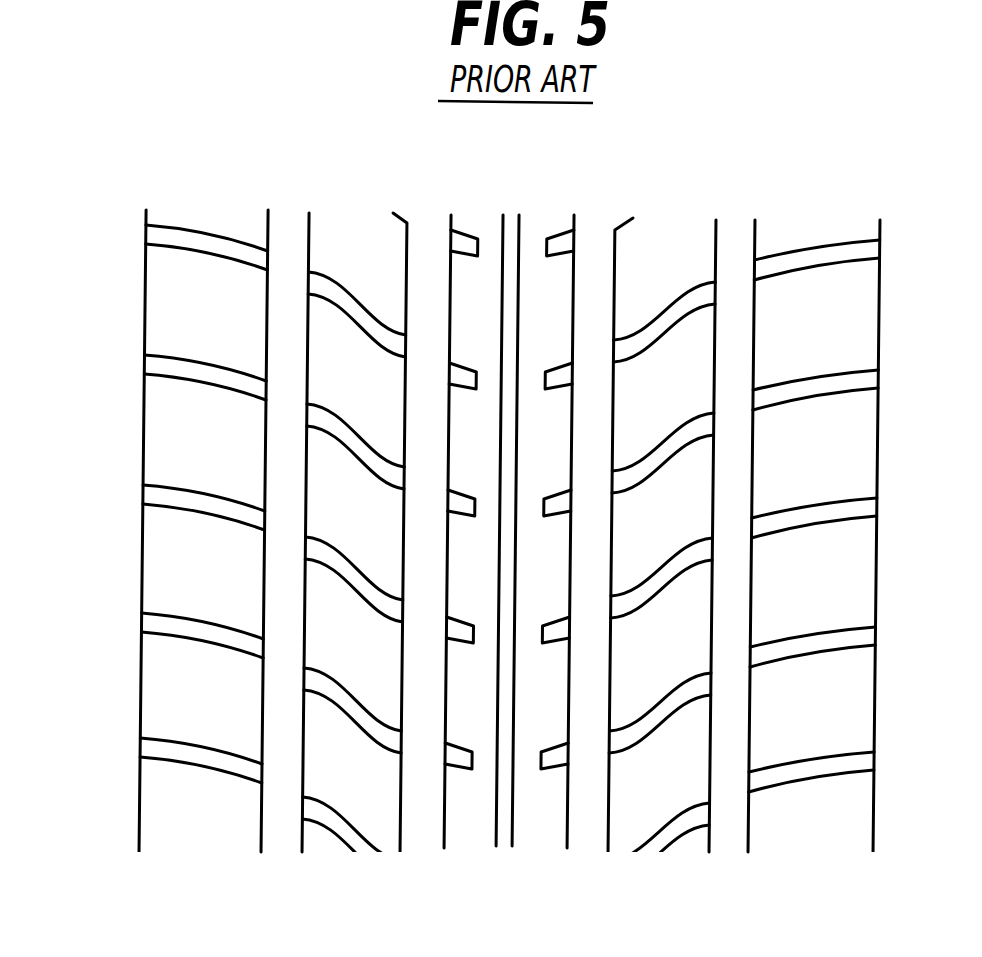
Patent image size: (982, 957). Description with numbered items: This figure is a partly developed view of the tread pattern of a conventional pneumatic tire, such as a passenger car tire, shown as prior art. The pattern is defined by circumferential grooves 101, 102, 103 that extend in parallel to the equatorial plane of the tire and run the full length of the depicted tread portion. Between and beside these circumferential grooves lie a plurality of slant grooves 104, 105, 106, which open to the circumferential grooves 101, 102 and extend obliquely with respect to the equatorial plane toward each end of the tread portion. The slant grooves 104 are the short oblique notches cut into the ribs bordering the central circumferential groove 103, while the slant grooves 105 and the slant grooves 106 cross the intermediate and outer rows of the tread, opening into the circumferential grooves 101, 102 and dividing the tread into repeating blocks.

The circumferential groove 101 is at (430, 303).
The circumferential groove 102 is at (290, 317).
The circumferential groove 103 is at (512, 277).
The slant groove 104 is at (461, 765).
The slant groove 105 is at (340, 688).
The slant groove 106 is at (183, 630).